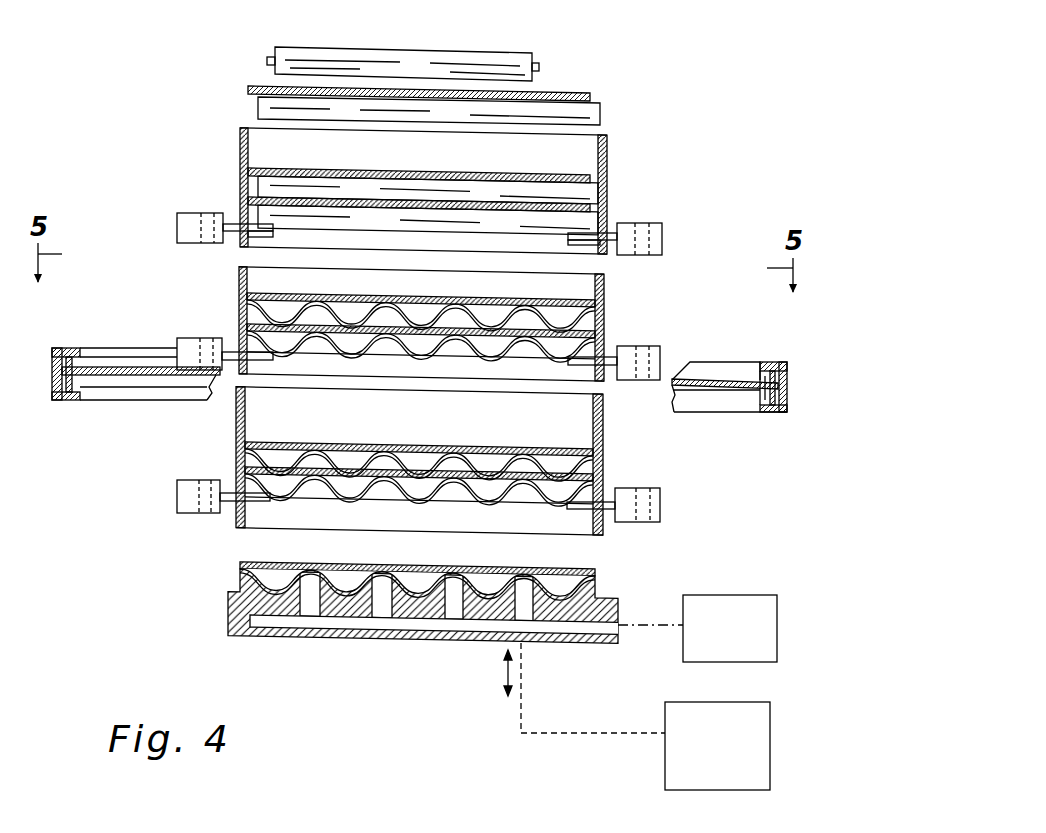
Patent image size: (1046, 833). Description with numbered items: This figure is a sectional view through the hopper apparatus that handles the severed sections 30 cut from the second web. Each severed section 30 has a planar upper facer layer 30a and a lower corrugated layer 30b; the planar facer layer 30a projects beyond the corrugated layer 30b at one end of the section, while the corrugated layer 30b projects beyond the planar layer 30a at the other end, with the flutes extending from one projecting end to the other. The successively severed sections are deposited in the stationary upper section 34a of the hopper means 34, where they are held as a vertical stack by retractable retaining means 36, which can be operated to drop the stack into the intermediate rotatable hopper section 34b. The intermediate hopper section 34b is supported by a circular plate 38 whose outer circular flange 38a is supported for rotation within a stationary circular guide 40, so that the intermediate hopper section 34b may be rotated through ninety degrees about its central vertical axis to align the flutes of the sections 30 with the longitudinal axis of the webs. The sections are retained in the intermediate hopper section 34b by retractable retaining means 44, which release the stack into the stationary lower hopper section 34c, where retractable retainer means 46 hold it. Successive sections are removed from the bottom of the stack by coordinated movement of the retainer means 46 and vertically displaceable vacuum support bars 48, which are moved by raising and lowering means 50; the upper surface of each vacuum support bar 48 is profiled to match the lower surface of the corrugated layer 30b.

The severed section 30 is at (442, 312).
The planar upper facer layer 30a is at (250, 85).
The corrugated layer 30b is at (503, 110).
The hopper means 34 is at (421, 331).
The stationary upper hopper section 34a is at (607, 158).
The intermediate rotatable hopper section 34b is at (604, 302).
The stationary lower hopper section 34c is at (603, 448).
The retractable retaining means 36 is at (193, 218).
The circular plate 38 is at (757, 370).
The circular flange 38a is at (785, 388).
The stationary circular guide 40 is at (790, 362).
The retractable retaining means 44 is at (187, 342).
The retractable retainer means 46 is at (177, 496).
The vacuum support bar 48 is at (328, 640).
The raising and lowering means 50 is at (663, 758).